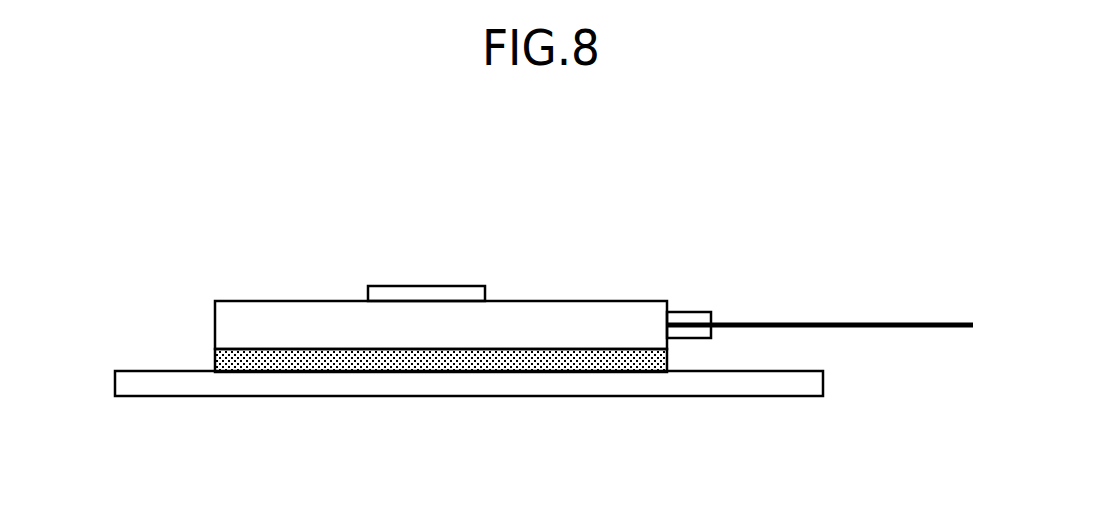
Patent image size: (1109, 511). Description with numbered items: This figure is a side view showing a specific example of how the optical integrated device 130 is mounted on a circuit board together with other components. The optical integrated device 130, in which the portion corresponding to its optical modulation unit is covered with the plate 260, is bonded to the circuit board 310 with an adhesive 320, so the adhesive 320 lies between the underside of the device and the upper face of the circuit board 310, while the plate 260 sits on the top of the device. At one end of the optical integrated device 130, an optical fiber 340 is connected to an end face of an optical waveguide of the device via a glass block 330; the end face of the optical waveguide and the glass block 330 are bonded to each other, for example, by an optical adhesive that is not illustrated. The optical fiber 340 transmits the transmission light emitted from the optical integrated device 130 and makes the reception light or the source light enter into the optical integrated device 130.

The optical integrated device 130 is at (590, 301).
The plate 260 is at (425, 286).
The circuit board 310 is at (145, 398).
The adhesive 320 is at (215, 360).
The glass block 330 is at (688, 312).
The optical fiber 340 is at (863, 322).